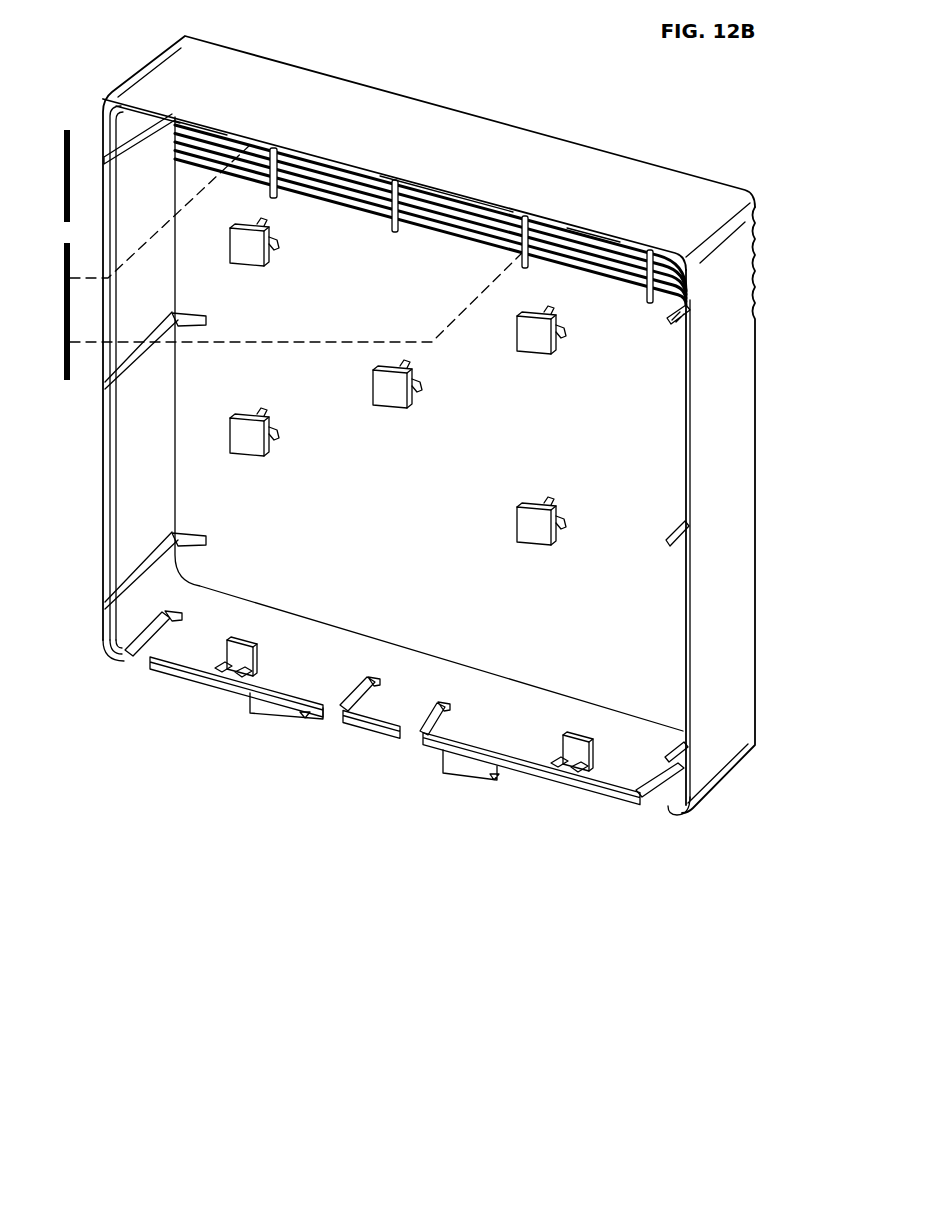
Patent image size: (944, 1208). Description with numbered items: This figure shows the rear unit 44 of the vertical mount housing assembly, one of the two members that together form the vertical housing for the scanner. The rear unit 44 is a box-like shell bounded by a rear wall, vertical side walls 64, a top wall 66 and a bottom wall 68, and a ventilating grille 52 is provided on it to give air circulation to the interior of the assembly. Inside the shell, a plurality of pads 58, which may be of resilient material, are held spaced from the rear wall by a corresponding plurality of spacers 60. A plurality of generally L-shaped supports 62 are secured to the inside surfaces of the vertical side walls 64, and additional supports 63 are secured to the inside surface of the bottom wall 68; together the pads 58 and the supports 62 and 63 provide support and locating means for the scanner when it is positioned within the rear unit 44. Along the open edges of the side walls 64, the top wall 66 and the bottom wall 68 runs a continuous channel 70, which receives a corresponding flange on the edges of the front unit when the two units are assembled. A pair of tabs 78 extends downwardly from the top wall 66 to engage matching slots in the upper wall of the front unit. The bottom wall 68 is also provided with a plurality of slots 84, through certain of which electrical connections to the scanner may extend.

The rear unit 44 is at (745, 462).
The ventilating grille 52 is at (617, 247).
The pads 58 is at (252, 266).
The spacers 60 is at (276, 248).
The supports 62 is at (137, 133).
The supports 63 is at (248, 640).
The side walls 64 is at (125, 440).
The top wall 66 is at (612, 164).
The bottom wall 68 is at (384, 708).
The channel 70 is at (185, 110).
The tabs 78 is at (237, 135).
The slots 84 is at (180, 623).